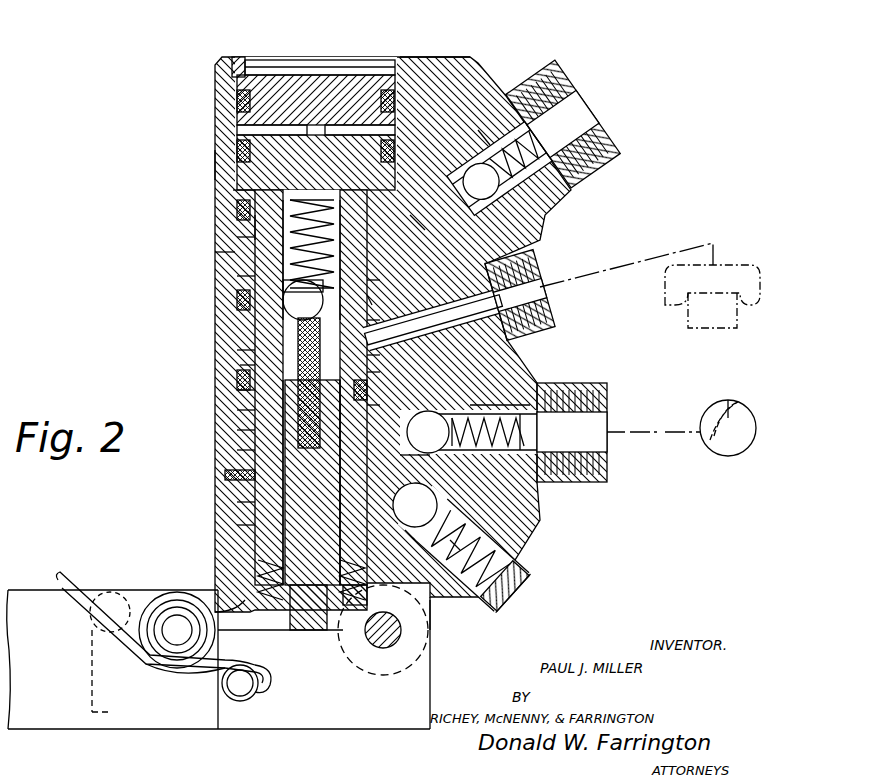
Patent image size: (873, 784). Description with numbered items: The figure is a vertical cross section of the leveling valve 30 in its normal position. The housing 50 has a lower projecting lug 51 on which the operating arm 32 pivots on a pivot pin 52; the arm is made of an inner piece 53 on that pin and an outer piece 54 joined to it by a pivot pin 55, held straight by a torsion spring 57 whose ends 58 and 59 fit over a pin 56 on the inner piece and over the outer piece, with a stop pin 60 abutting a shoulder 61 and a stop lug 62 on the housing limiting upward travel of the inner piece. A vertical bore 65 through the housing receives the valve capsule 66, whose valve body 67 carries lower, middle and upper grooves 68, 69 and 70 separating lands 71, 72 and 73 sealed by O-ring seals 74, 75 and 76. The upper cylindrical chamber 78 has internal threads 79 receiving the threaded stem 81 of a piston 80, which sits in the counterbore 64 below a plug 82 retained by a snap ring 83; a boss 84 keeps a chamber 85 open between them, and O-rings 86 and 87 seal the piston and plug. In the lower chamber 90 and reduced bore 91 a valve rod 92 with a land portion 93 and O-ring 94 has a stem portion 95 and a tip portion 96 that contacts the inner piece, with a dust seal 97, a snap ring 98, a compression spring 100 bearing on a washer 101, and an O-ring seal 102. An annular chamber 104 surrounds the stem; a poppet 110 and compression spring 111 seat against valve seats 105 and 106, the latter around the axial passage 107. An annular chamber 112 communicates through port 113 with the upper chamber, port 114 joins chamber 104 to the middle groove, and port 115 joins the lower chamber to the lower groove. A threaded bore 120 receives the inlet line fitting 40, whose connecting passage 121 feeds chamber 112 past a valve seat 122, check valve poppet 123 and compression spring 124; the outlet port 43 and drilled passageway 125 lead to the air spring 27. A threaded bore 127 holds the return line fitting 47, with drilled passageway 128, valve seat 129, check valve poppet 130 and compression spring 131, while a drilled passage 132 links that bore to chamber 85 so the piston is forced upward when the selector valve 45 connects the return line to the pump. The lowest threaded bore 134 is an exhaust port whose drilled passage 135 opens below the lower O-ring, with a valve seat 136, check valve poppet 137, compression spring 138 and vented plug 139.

The air spring 27 is at (745, 262).
The leveling valve 30 is at (432, 57).
The operating arm 32 is at (72, 732).
The inlet line fitting 40 is at (589, 174).
The outlet port 43 is at (541, 289).
The selector valve 45 is at (722, 456).
The return line fitting 47 is at (588, 388).
The housing 50 is at (218, 75).
The projecting lug 51 is at (435, 615).
The pivot pin 52 is at (381, 648).
The inner piece 53 is at (425, 700).
The outer piece 54 is at (30, 595).
The pivot pin 55 is at (176, 628).
The pin 56 is at (243, 690).
The torsion spring 57 is at (168, 668).
The spring end 58 is at (264, 664).
The spring end 59 is at (66, 574).
The stop pin 60 is at (110, 592).
The shoulder 61 is at (100, 670).
The stop lug 62 is at (232, 606).
The counterbore 64 is at (240, 57).
The bore 65 is at (255, 335).
The valve capsule 66 is at (237, 410).
The valve body 67 is at (237, 450).
The lower groove 68 is at (237, 430).
The middle groove 69 is at (237, 350).
The upper groove 70 is at (255, 225).
The lower land 71 is at (237, 525).
The middle land 72 is at (237, 390).
The upper land 73 is at (237, 278).
The O-ring seal 74 is at (225, 474).
The O-ring seal 75 is at (237, 375).
The O-ring seal 76 is at (237, 300).
The cylindrical chamber 78 is at (225, 252).
The internal threads 79 is at (233, 192).
The piston 80 is at (237, 150).
The threaded stem 81 is at (237, 205).
The plug 82 is at (302, 90).
The snap ring 83 is at (262, 68).
The projecting boss 84 is at (305, 132).
The chamber 85 is at (240, 130).
The O-ring 86 is at (218, 165).
The O-ring 87 is at (394, 102).
The chamber 90 is at (268, 400).
The reduced bore 91 is at (296, 322).
The valve rod 92 is at (290, 615).
The land portion 93 is at (237, 502).
The O-ring 94 is at (320, 480).
The stem portion 95 is at (367, 372).
The tip portion 96 is at (330, 630).
The dust seal 97 is at (258, 585).
The snap ring 98 is at (258, 565).
The compression spring 100 is at (408, 438).
The washer 101 is at (367, 388).
The O-ring seal 102 is at (240, 365).
The annular chamber 104 is at (367, 355).
The valve seat 105 is at (280, 318).
The valve seat 106 is at (375, 318).
The axial passage 107 is at (318, 475).
The poppet 110 is at (372, 300).
The compression spring 111 is at (325, 205).
The annular chamber 112 is at (237, 237).
The port 113 is at (367, 280).
The port 114 is at (370, 325).
The port 115 is at (367, 405).
The threaded bore 120 is at (543, 231).
The connecting passage 121 is at (418, 228).
The valve seat 122 is at (480, 138).
The check valve poppet 123 is at (463, 181).
The compression spring 124 is at (512, 236).
The drilled passageway 125 is at (438, 343).
The threaded bore 127 is at (490, 395).
The drilled passageway 128 is at (452, 412).
The valve seat 129 is at (400, 456).
The check valve poppet 130 is at (472, 455).
The compression spring 131 is at (500, 470).
The drilled passage 132 is at (429, 304).
The threaded bore 134 is at (499, 542).
The drilled passage 135 is at (400, 507).
The valve seat 136 is at (410, 535).
The check valve poppet 137 is at (455, 545).
The compression spring 138 is at (491, 555).
The vented plug 139 is at (523, 603).